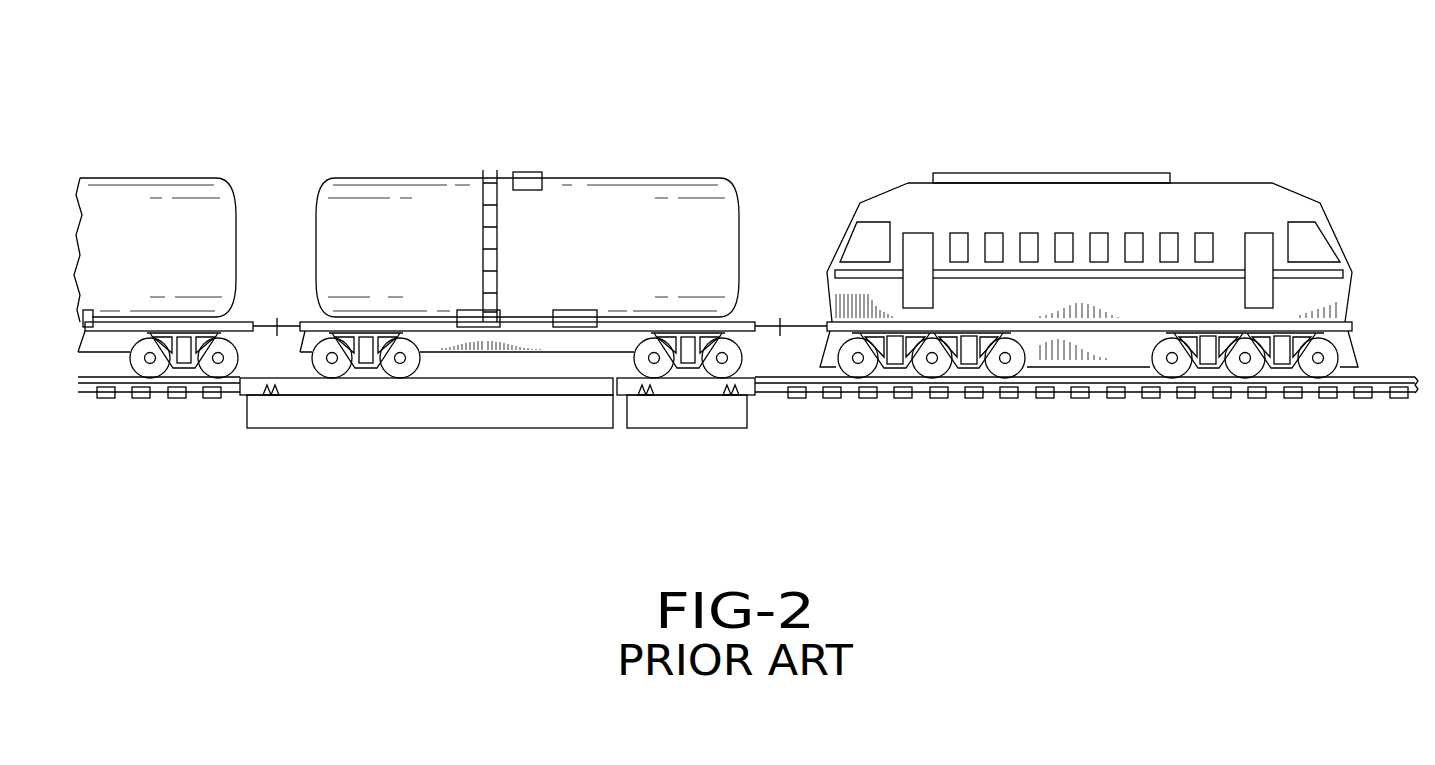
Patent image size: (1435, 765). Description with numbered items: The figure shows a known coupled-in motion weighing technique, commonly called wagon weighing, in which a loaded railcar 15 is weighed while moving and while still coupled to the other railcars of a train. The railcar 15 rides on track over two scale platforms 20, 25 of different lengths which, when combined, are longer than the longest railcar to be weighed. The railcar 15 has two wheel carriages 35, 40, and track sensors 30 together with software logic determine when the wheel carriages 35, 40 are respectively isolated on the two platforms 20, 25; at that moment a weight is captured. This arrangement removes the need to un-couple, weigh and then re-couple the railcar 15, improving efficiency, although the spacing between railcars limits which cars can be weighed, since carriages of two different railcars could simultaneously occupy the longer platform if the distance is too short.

The loaded railcar 15 is at (655, 153).
The scale platform 20 is at (496, 431).
The scale platform 25 is at (690, 431).
The track sensors 30 is at (276, 397).
The wheel carriage 35 is at (379, 375).
The wheel carriage 40 is at (633, 371).